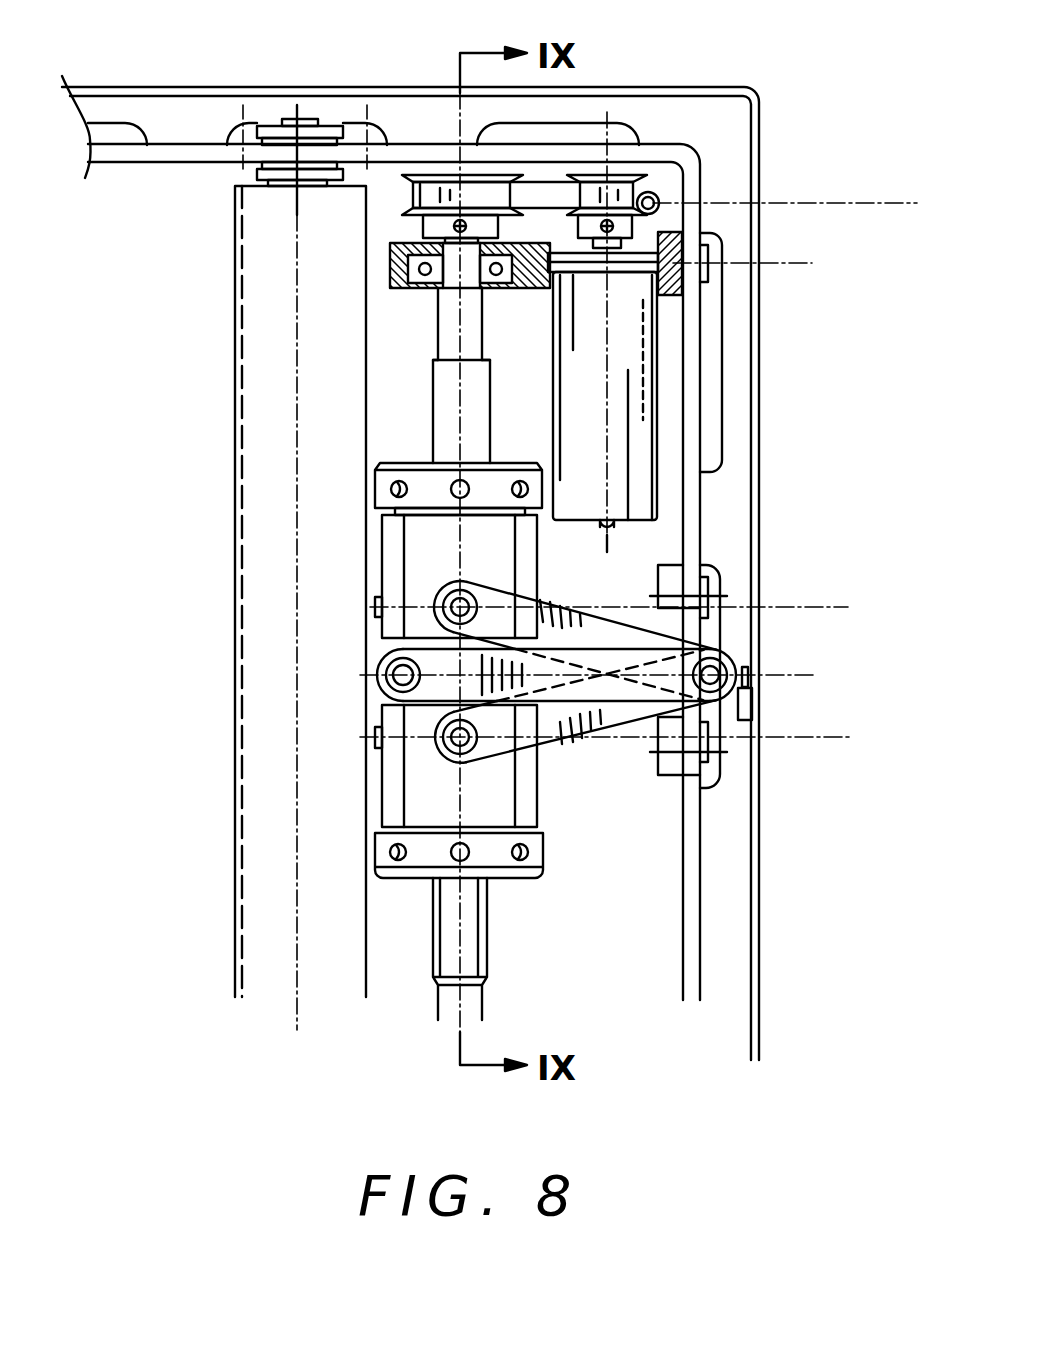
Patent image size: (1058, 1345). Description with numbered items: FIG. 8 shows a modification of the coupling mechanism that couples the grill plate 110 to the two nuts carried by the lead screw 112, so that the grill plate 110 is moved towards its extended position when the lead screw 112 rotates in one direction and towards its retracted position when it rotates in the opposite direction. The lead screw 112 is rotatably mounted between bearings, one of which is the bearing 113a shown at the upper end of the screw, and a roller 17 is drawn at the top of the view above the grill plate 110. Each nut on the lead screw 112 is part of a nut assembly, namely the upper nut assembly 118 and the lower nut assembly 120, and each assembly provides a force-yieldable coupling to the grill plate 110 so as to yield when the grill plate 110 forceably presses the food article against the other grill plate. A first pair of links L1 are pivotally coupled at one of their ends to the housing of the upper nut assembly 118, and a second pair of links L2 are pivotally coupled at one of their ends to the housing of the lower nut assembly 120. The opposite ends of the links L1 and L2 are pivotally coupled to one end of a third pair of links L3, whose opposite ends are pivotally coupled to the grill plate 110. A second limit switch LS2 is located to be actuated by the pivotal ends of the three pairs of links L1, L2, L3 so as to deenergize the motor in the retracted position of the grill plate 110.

The roller 17 is at (296, 120).
The grill plate 110 is at (237, 440).
The bearing 113a is at (392, 288).
The nut assembly 118 is at (372, 544).
The nut assembly 120 is at (372, 800).
The lead screw 112 is at (488, 933).
The first pair of links L1 is at (593, 620).
The second pair of links L2 is at (580, 733).
The third pair of links L3 is at (435, 697).
The second limit switch LS2 is at (748, 705).